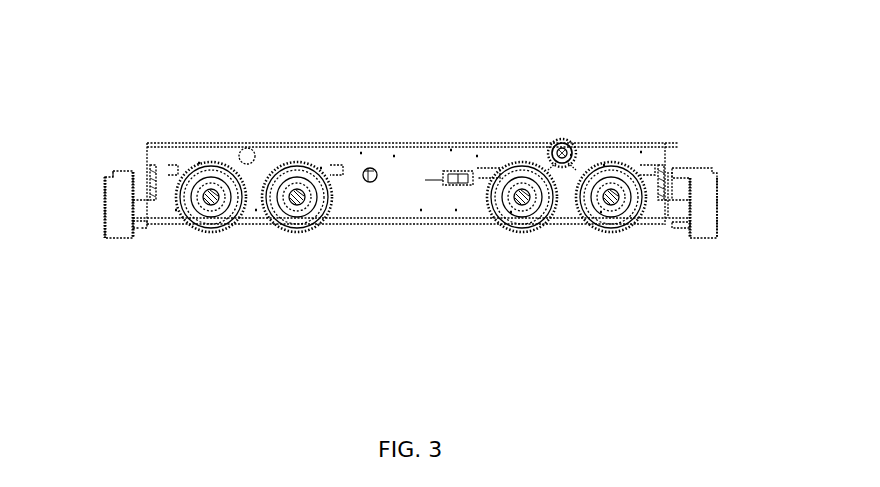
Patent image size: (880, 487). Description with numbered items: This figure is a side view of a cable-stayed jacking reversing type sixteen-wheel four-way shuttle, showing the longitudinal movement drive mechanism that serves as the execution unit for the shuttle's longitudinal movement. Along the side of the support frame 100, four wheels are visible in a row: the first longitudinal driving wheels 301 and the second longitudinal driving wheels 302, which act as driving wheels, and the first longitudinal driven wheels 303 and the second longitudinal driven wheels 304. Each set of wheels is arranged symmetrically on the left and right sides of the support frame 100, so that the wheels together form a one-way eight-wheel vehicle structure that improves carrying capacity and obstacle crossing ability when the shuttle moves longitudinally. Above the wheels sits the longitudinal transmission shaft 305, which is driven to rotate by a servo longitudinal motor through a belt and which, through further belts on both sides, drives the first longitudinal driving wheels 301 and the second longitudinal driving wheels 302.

The support frame 100 is at (405, 160).
The first longitudinal driving wheels 301 is at (632, 205).
The second longitudinal driving wheels 302 is at (501, 205).
The first longitudinal driven wheels 303 is at (326, 205).
The second longitudinal driven wheels 304 is at (191, 199).
The longitudinal transmission shaft 305 is at (557, 138).